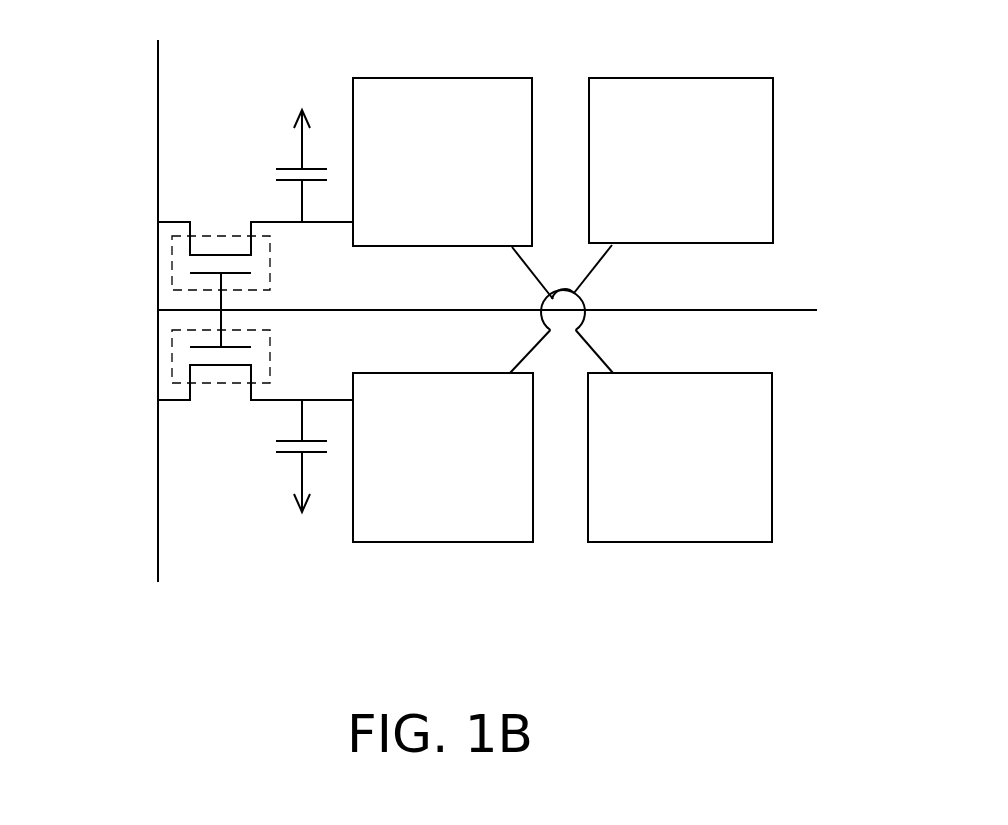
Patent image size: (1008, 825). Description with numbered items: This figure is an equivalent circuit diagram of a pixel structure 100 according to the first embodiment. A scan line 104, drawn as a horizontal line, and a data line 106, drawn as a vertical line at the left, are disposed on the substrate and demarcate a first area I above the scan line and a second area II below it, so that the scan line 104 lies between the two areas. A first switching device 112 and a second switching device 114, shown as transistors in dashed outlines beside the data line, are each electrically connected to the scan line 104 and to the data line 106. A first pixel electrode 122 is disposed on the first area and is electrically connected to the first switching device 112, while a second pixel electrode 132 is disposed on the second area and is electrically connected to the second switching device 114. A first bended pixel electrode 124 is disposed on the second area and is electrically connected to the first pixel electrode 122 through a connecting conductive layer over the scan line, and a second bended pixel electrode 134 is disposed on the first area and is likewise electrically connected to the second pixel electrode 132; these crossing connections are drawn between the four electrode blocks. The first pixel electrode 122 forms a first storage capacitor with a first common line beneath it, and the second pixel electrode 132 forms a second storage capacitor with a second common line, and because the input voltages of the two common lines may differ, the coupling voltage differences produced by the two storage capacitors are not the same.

The pixel structure 100 is at (852, 638).
The scan line 104 is at (706, 310).
The data line 106 is at (158, 508).
The first switching device 112 is at (172, 265).
The second switching device 114 is at (172, 352).
The first pixel electrode 122 is at (467, 78).
The first bended pixel electrode 124 is at (705, 542).
The second pixel electrode 132 is at (468, 542).
The second bended pixel electrode 134 is at (705, 78).